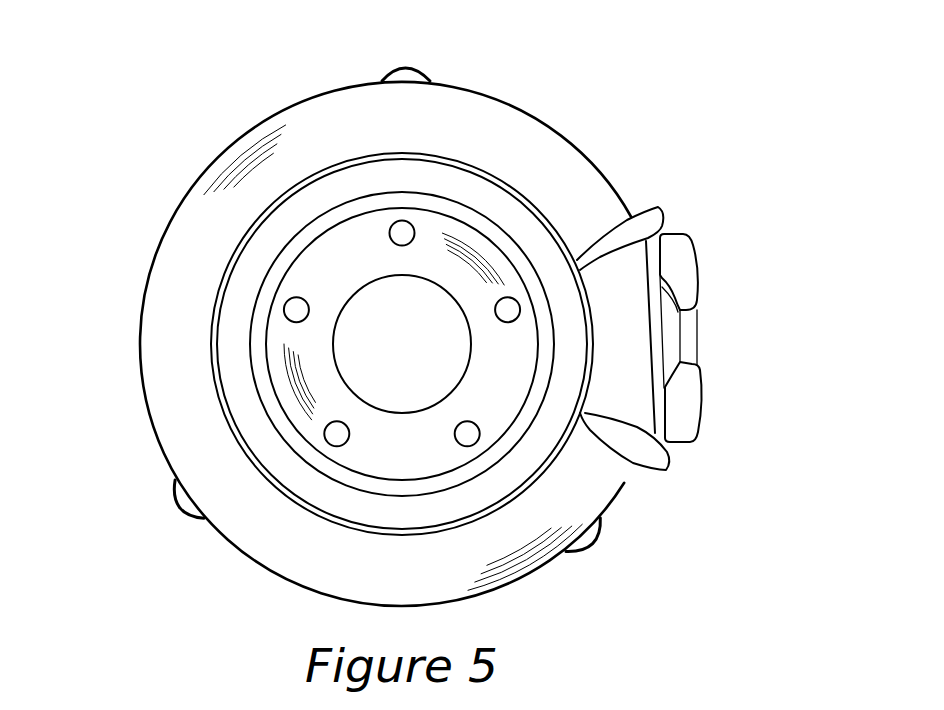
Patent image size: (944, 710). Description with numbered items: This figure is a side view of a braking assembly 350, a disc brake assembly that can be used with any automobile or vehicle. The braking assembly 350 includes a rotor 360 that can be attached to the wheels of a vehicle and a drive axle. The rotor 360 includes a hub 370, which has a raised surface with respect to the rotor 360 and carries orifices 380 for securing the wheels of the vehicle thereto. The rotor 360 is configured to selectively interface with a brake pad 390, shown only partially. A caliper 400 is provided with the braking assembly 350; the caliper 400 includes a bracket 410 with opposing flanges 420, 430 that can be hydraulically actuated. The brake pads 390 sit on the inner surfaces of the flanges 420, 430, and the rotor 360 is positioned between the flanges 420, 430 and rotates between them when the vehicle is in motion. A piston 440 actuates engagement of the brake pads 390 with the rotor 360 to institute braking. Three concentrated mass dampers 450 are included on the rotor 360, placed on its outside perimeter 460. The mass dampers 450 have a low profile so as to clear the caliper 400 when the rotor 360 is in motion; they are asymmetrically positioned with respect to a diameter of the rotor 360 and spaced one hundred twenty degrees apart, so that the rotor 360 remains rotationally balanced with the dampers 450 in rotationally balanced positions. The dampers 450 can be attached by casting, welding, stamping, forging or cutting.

The braking assembly 350 is at (203, 126).
The rotor 360 is at (537, 128).
The hub 370 is at (417, 265).
The orifices 380 is at (399, 240).
The brake pad 390 is at (645, 481).
The caliper 400 is at (710, 255).
The bracket 410 is at (650, 317).
The flange 420 is at (650, 225).
The flange 430 is at (688, 290).
The piston 440 is at (672, 348).
The concentrated mass dampers 450 is at (405, 79).
The outside perimeter 460 is at (293, 105).